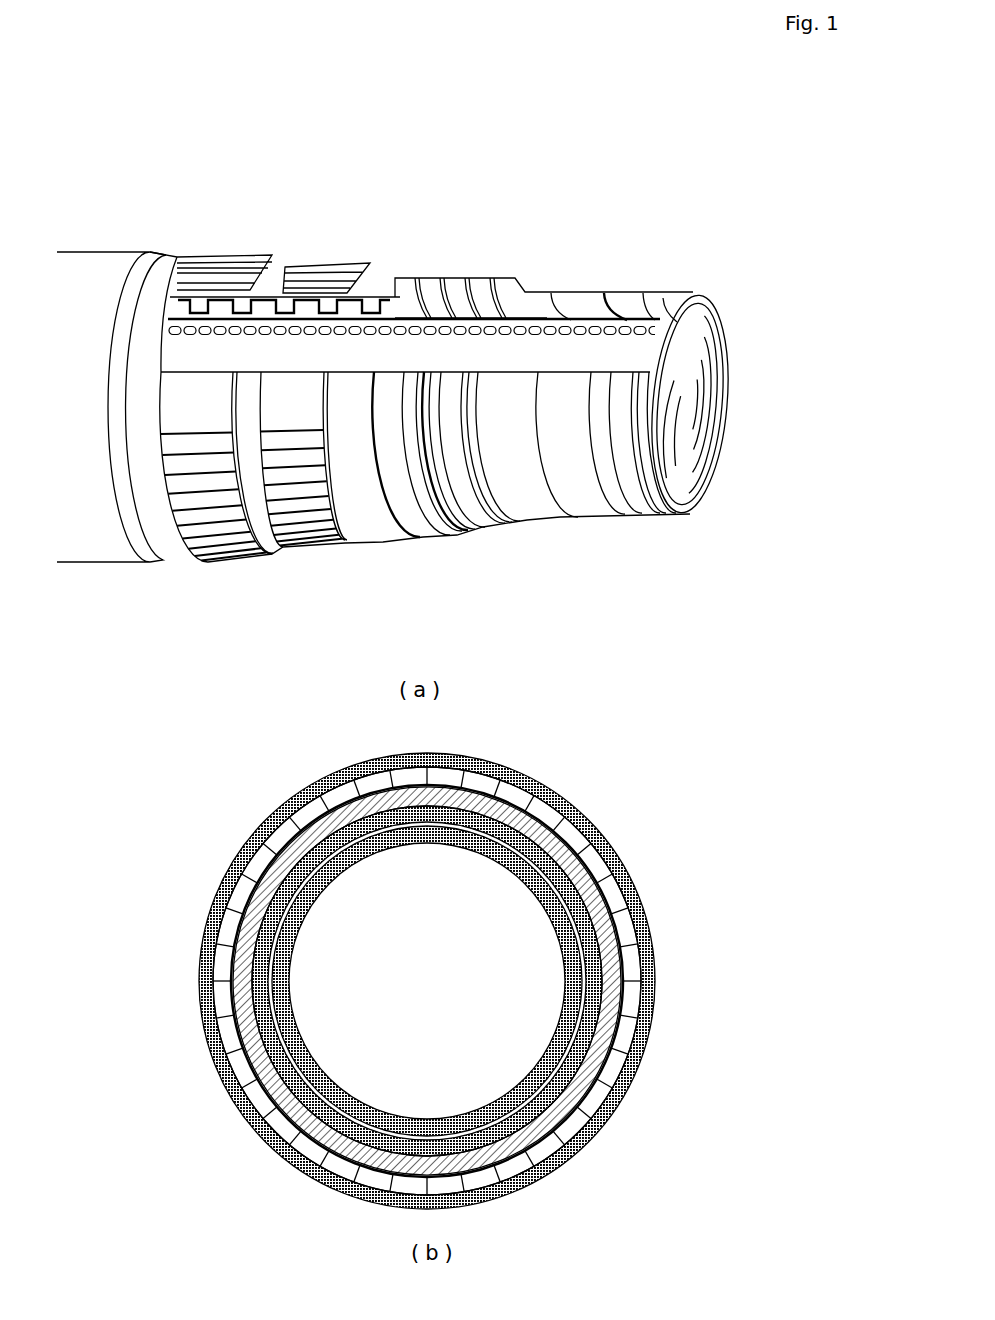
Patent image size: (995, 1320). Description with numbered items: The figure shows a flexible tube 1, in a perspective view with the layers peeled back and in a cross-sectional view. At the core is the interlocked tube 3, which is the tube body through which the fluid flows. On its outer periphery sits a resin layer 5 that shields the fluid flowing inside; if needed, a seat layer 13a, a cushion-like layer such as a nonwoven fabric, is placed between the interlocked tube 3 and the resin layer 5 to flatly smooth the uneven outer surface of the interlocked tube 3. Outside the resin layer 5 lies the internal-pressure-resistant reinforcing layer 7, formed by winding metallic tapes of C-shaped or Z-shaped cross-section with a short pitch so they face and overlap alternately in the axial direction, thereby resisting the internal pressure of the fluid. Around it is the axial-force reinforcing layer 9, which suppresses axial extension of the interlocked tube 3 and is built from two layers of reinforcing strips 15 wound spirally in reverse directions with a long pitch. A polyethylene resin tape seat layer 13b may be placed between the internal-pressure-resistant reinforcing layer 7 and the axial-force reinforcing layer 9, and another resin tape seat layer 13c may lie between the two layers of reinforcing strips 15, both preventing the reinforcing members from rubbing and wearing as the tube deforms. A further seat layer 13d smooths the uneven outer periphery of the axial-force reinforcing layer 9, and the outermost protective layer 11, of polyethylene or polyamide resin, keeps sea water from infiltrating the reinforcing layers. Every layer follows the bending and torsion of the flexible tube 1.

The flexible tube 1 is at (630, 168).
The interlocked tube 3 is at (647, 505).
The resin layer 5 is at (542, 515).
The internal-pressure-resistant reinforcing layer 7 is at (520, 262).
The axial-force reinforcing layer 9 is at (370, 565).
The protective layer 11 is at (95, 252).
The seat layer 13a is at (594, 297).
The seat layer 13b is at (390, 282).
The seat layer 13c is at (283, 272).
The seat layer 13d is at (160, 540).
The reinforcing strips 15 is at (362, 520).